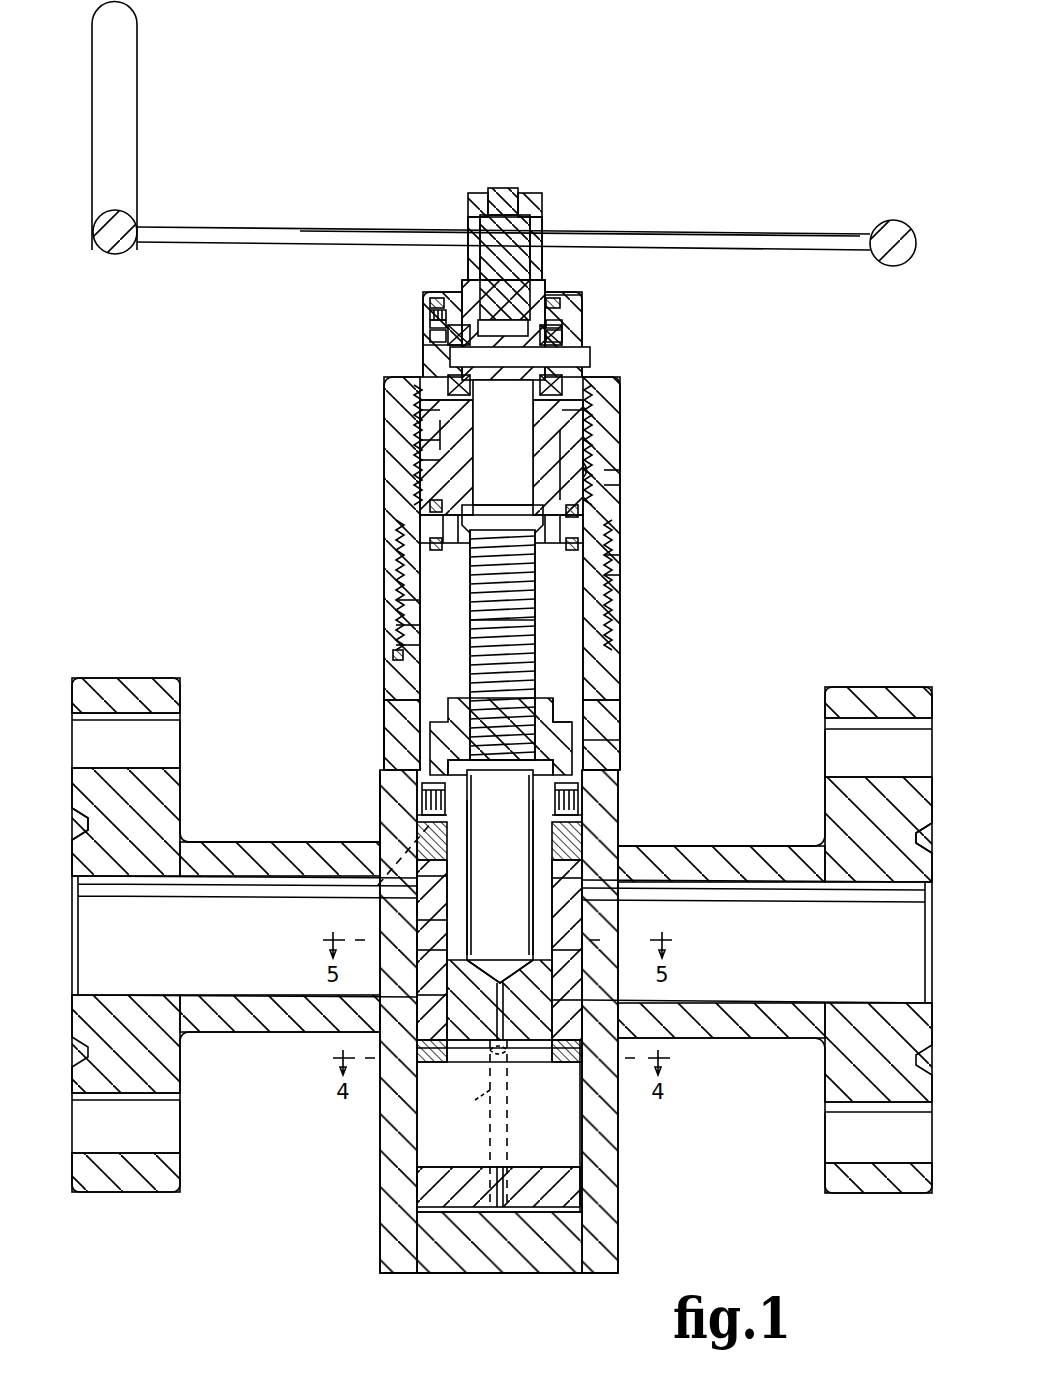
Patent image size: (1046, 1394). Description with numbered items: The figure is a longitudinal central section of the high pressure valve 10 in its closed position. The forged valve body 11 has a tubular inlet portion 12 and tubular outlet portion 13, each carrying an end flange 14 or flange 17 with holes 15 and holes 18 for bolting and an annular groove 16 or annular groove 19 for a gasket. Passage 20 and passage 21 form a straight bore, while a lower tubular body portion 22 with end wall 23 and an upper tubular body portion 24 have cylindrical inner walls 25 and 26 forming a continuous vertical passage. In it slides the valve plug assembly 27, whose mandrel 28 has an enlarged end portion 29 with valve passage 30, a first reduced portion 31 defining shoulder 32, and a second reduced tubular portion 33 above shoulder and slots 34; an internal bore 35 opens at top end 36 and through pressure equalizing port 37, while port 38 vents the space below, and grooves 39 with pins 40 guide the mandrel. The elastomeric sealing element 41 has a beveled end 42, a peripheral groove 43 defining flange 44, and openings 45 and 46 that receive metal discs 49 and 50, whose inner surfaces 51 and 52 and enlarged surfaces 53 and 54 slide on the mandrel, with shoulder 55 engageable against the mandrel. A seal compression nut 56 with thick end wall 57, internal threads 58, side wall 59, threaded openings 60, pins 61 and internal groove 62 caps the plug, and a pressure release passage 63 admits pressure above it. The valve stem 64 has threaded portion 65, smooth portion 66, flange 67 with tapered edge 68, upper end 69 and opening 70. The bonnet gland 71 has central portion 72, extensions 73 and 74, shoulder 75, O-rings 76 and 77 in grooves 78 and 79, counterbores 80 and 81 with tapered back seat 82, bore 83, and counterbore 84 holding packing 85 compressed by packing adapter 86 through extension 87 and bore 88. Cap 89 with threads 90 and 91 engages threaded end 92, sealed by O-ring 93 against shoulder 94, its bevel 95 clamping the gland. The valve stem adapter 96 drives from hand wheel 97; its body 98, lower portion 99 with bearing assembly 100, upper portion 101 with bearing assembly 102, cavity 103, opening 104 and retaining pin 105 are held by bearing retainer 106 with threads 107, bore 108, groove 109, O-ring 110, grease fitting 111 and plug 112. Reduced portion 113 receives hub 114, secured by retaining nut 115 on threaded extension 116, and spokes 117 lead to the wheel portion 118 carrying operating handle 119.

The high pressure valve 10 is at (300, 590).
The valve body 11 is at (370, 838).
The tubular inlet portion 12 is at (228, 840).
The tubular outlet portion 13 is at (768, 850).
The end flange 14 is at (100, 690).
The holes or apertures 15 is at (165, 735).
The annular groove 16 is at (80, 818).
The flange 17 is at (872, 692).
The holes or apertures 18 is at (835, 745).
The annular groove 19 is at (930, 826).
The tubular passage 20 is at (145, 880).
The tubular passage 21 is at (782, 884).
The tubular body portion 22 is at (380, 1185).
The end wall 23 is at (497, 1273).
The tubular body portion 24 is at (386, 748).
The cylindrical inner wall 25 is at (578, 1120).
The cylindrical inner wall 26 is at (580, 745).
The cylindrical valve plug assembly 27 is at (582, 935).
The mandrel 28 is at (540, 978).
The enlarged cylindrical end portion 29 is at (580, 1192).
The valve passage 30 is at (417, 1160).
The first portion of reduced diameter 31 is at (430, 995).
The shoulder 32 is at (425, 1050).
The second portion of reduced diameter 33 is at (445, 918).
The shoulder and slots 34 is at (455, 820).
The internal bore 35 is at (533, 875).
The top end portion 36 is at (523, 780).
The pressure equalizing port 37 is at (505, 1050).
The pressure equalizing port or passage 38 is at (497, 1165).
The longitudinally extending grooves 39 is at (508, 1140).
The pins 40 is at (478, 1088).
The sealing element 41 is at (600, 838).
The beveled lower end portion 42 is at (560, 1050).
The peripheral groove 43 is at (582, 905).
The flange 44 is at (582, 812).
The opening 45 is at (417, 900).
The opening 46 is at (565, 995).
The cylindrically curved disc 49 is at (400, 950).
The cylindrically curved disc 50 is at (600, 955).
The inner surface 51 is at (472, 915).
The inner surface 52 is at (552, 900).
The lower enlarged cylindrical surface 53 is at (458, 1052).
The lower enlarged cylindrical surface 54 is at (540, 1052).
The shoulder 55 is at (478, 957).
The seal compression nut 56 is at (434, 722).
The thick end wall portion 57 is at (545, 705).
The internal threads 58 is at (470, 705).
The tubular side wall 59 is at (585, 770).
The apertures or openings 60 is at (420, 795).
The pins 61 is at (425, 805).
The internal groove 62 is at (430, 830).
The pressure release passage 63 is at (385, 893).
The valve stem 64 is at (395, 590).
The threaded portion 65 is at (540, 650).
The smooth cylindrical portion 66 is at (440, 478).
The flange 67 is at (462, 606).
The tapered edge portion 68 is at (535, 610).
The extreme upper end 69 is at (562, 335).
The opening 70 is at (575, 356).
The valve stem bonnet gland 71 is at (622, 485).
The central portion 72 is at (622, 470).
The hollow extension 73 is at (583, 460).
The hollow extension 74 is at (600, 536).
The shoulder 75 is at (402, 525).
The O-ring 76 is at (598, 522).
The O-ring 77 is at (605, 555).
The peripheral groove 78 is at (605, 497).
The peripheral groove 79 is at (608, 575).
The counterbore 80 is at (545, 545).
The counterbore 81 is at (400, 537).
The tapered portion 82 is at (445, 505).
The smaller bore 83 is at (535, 500).
The counterbore 84 is at (430, 445).
The valve stem packing 85 is at (430, 462).
The packing adapter 86 is at (425, 415).
The tubular extension 87 is at (430, 430).
The bore 88 is at (528, 420).
The cap or valve bonnet adapter nut 89 is at (388, 395).
The internal threads 90 is at (416, 378).
The internal threads 91 is at (398, 610).
The threaded end portion 92 is at (398, 630).
The O-ring or gasket 93 is at (400, 652).
The shoulder 94 is at (392, 680).
The internally beveled portion 95 is at (592, 470).
The valve stem adapter 96 is at (548, 290).
The hand wheel 97 is at (373, 220).
The central cylindrical body portion 98 is at (440, 340).
The lower cylindrical portion 99 is at (600, 412).
The bearing assembly 100 is at (612, 392).
The upper cylindrical portion 101 is at (455, 292).
The bearing assembly 102 is at (582, 352).
The internal bore or cavity 103 is at (486, 377).
The laterally extending opening 104 is at (440, 355).
The valve stem retaining pin 105 is at (575, 372).
The bearing retainer 106 is at (580, 300).
The external threads 107 is at (622, 430).
The internal bore 108 is at (585, 330).
The annular groove 109 is at (430, 297).
The O-ring 110 is at (580, 310).
The threaded grease fitting 111 is at (428, 308).
The plug 112 is at (440, 318).
The portion of reduced diameter 113 is at (468, 258).
The cylindrical hub 114 is at (468, 225).
The retaining nut 115 is at (519, 195).
The threaded extension 116 is at (470, 200).
The spokes 117 is at (765, 231).
The annular wheel portion 118 is at (893, 263).
The operating handle 119 is at (132, 80).